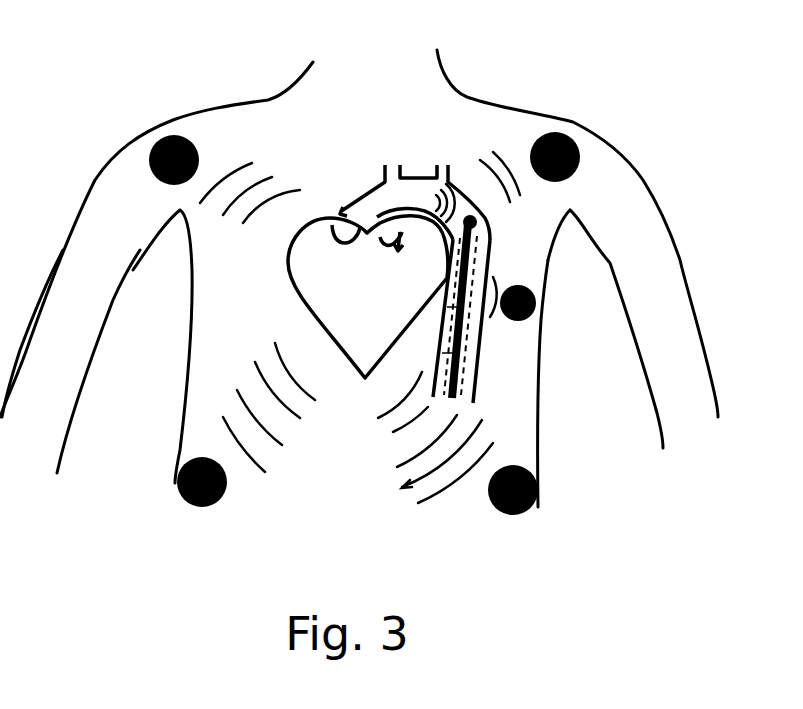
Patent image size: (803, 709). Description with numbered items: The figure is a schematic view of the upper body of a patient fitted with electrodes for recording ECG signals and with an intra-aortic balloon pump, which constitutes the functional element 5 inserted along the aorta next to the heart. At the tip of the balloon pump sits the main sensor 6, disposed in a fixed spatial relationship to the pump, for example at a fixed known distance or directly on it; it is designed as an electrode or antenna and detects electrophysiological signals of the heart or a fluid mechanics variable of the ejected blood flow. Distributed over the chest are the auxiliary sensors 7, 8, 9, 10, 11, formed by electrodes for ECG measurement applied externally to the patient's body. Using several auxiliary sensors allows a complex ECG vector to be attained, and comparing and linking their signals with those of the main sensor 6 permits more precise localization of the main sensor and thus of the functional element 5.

The functional element 5 is at (470, 338).
The main sensor 6 is at (478, 223).
The auxiliary sensor 7 is at (174, 136).
The auxiliary sensor 8 is at (568, 134).
The auxiliary sensor 9 is at (178, 485).
The auxiliary sensor 10 is at (538, 495).
The auxiliary sensor 11 is at (536, 310).